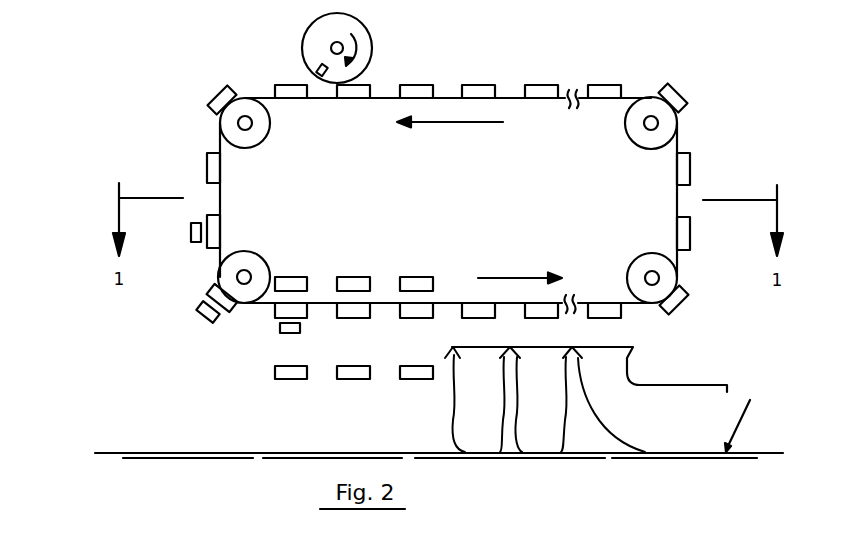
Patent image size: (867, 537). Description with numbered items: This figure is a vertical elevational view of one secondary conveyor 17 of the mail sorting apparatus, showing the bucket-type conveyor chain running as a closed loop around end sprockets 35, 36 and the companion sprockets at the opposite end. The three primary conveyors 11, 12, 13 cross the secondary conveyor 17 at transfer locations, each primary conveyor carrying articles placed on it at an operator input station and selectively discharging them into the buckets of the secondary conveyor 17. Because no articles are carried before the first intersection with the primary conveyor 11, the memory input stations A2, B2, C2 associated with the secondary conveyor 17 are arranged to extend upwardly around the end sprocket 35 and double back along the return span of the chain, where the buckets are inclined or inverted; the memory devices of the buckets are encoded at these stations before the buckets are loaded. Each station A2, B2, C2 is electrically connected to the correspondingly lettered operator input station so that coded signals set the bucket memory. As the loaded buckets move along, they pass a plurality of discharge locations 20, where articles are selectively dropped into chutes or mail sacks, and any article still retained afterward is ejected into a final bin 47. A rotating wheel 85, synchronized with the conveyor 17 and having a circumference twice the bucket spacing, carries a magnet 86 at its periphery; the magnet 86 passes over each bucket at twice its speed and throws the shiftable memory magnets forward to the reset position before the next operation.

The primary conveyor 11 is at (292, 277).
The primary conveyor 12 is at (354, 277).
The primary conveyor 13 is at (416, 277).
The secondary conveyor 17 is at (451, 301).
The sorting destinations (discharge locations) 20 is at (487, 443).
The end sprocket 35 is at (244, 253).
The end sprocket 36 is at (261, 139).
The final bin 47 is at (660, 429).
The rotating wheel 85 is at (371, 45).
The magnet 86 is at (315, 70).
The memory input station A2 is at (178, 239).
The memory input station B2 is at (204, 317).
The memory input station C2 is at (292, 343).